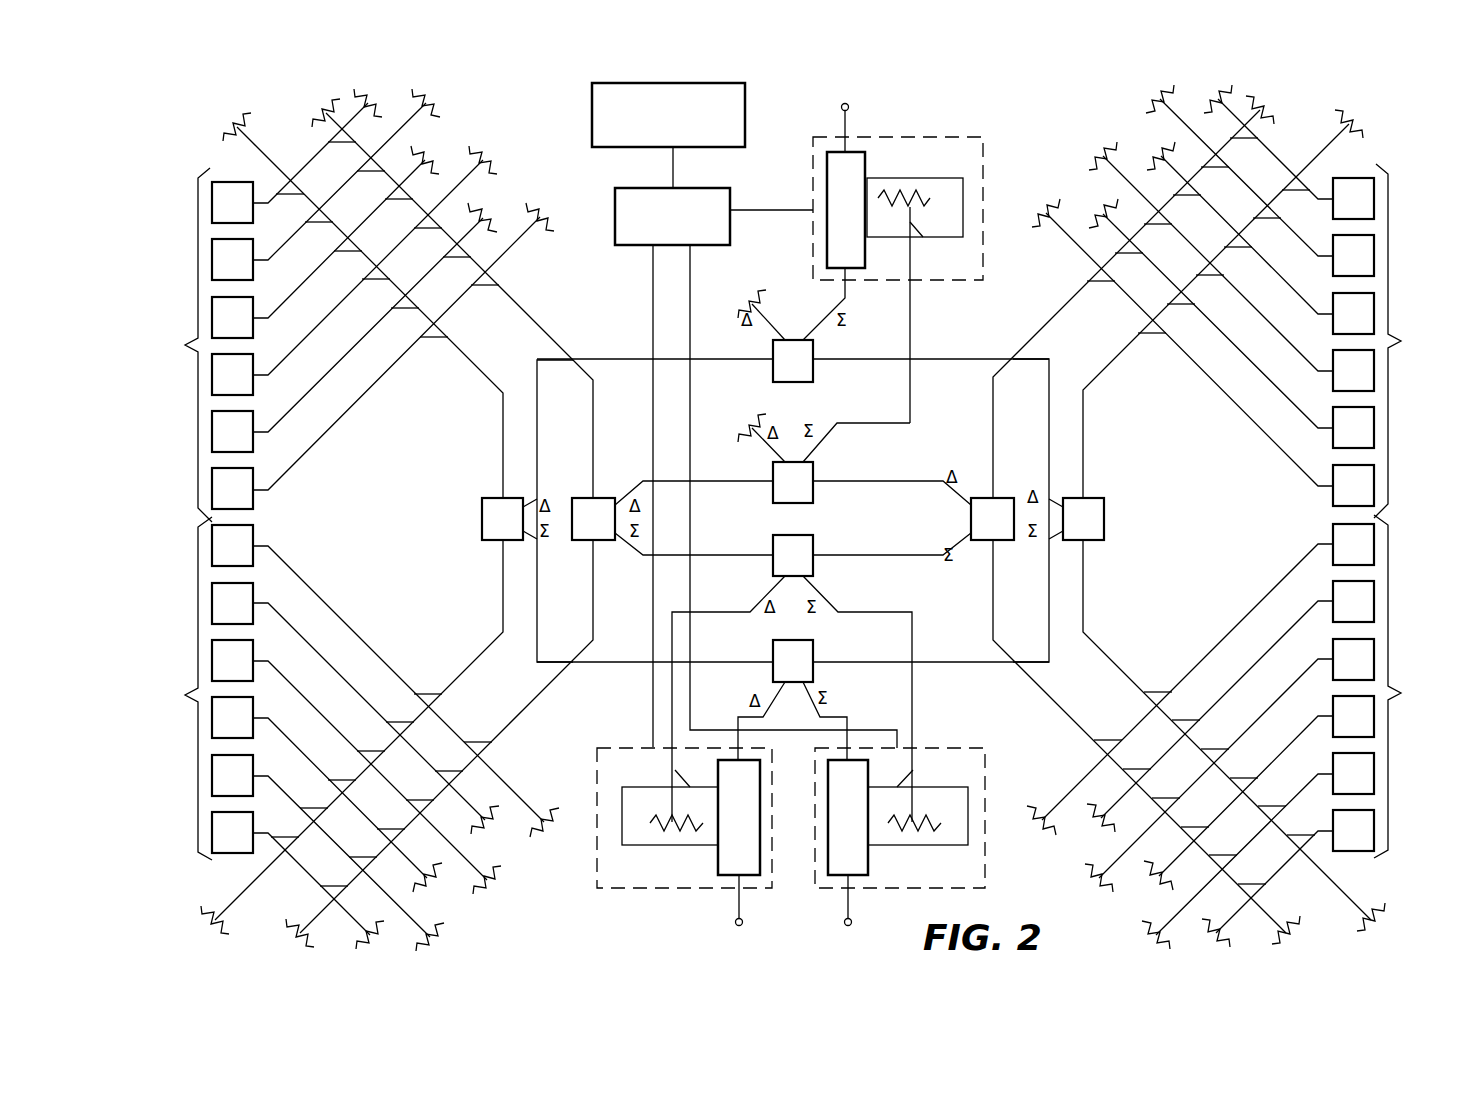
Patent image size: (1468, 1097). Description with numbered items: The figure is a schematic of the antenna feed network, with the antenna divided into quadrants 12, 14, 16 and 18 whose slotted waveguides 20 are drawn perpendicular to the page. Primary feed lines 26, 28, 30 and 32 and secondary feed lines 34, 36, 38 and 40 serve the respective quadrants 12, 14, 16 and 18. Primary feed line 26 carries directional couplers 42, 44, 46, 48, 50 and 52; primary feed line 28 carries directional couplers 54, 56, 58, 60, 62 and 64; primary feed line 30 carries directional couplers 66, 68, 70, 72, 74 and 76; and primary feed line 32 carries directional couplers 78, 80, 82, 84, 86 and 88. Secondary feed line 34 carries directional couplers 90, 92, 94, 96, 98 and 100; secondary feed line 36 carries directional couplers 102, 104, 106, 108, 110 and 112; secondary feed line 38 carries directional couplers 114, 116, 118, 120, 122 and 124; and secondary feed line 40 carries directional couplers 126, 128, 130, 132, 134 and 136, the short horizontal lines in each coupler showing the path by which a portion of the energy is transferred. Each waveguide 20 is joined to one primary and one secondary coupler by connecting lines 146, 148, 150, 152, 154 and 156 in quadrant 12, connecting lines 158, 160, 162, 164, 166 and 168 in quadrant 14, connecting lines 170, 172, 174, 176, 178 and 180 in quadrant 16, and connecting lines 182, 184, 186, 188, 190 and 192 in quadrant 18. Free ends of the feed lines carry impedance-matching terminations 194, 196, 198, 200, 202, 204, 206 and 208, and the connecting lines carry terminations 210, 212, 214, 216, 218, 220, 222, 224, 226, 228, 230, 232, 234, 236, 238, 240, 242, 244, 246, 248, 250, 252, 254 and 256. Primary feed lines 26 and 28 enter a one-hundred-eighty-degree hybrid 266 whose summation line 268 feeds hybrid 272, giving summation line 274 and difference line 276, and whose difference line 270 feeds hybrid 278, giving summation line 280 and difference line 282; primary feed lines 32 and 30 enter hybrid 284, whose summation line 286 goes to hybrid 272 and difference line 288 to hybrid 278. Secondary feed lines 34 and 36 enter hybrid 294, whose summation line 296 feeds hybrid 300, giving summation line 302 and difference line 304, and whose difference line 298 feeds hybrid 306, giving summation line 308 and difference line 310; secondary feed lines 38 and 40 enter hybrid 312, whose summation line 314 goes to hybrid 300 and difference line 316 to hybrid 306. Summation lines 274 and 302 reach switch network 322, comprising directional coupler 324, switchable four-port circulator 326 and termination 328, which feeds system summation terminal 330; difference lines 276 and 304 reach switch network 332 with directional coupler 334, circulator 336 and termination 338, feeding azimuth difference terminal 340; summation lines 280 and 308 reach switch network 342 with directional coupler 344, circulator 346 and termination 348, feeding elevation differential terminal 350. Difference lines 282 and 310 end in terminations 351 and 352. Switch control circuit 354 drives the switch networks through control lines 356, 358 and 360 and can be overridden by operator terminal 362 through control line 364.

The quadrant 12 is at (1411, 341).
The quadrant 14 is at (1410, 686).
The quadrant 16 is at (180, 688).
The quadrant 18 is at (180, 345).
The slotted waveguide 20 is at (232, 205).
The primary feed line 26 is at (1083, 418).
The primary feed line 28 is at (1083, 598).
The primary feed line 30 is at (503, 598).
The primary feed line 32 is at (503, 424).
The secondary feed line 34 is at (1063, 306).
The secondary feed line 36 is at (1035, 683).
The secondary feed line 38 is at (593, 598).
The secondary feed line 40 is at (540, 327).
The directional coupler 42 is at (1152, 337).
The directional coupler 44 is at (1181, 308).
The directional coupler 46 is at (1210, 279).
The directional coupler 48 is at (1238, 251).
The directional coupler 50 is at (1267, 222).
The directional coupler 52 is at (1296, 194).
The directional coupler 54 is at (1158, 688).
The directional coupler 56 is at (1186, 716).
The directional coupler 58 is at (1215, 745).
The directional coupler 60 is at (1244, 774).
The directional coupler 62 is at (1272, 802).
The directional coupler 64 is at (1301, 831).
The directional coupler 66 is at (428, 690).
The directional coupler 68 is at (400, 718).
The directional coupler 70 is at (371, 747).
The directional coupler 72 is at (342, 776).
The directional coupler 74 is at (314, 804).
The directional coupler 76 is at (285, 833).
The directional coupler 78 is at (434, 341).
The directional coupler 80 is at (405, 312).
The directional coupler 82 is at (376, 283).
The directional coupler 84 is at (348, 255).
The directional coupler 86 is at (319, 226).
The directional coupler 88 is at (290, 198).
The directional coupler 90 is at (1101, 285).
The directional coupler 92 is at (1129, 257).
The directional coupler 94 is at (1158, 228).
The directional coupler 96 is at (1187, 199).
The directional coupler 98 is at (1215, 171).
The directional coupler 100 is at (1244, 142).
The directional coupler 102 is at (1108, 736).
The directional coupler 104 is at (1137, 765).
The directional coupler 106 is at (1166, 794).
The directional coupler 108 is at (1195, 823).
The directional coupler 110 is at (1223, 851).
The directional coupler 112 is at (1252, 880).
The directional coupler 114 is at (478, 738).
The directional coupler 116 is at (455, 753).
The directional coupler 118 is at (420, 796).
The directional coupler 120 is at (398, 810).
The directional coupler 122 is at (363, 853).
The directional coupler 124 is at (334, 882).
The directional coupler 126 is at (485, 289).
The directional coupler 128 is at (457, 261).
The directional coupler 130 is at (428, 232).
The directional coupler 132 is at (399, 203).
The directional coupler 134 is at (371, 175).
The directional coupler 136 is at (342, 146).
The connecting line 146 is at (1283, 451).
The connecting line 148 is at (1310, 420).
The connecting line 150 is at (1310, 363).
The connecting line 152 is at (1310, 306).
The connecting line 154 is at (1310, 250).
The connecting line 156 is at (1320, 192).
The connecting line 158 is at (1290, 575).
The connecting line 160 is at (1310, 612).
The connecting line 162 is at (1310, 668).
The connecting line 164 is at (1310, 726).
The connecting line 166 is at (1310, 786).
The connecting line 168 is at (1320, 835).
The connecting line 170 is at (290, 567).
The connecting line 172 is at (276, 612).
The connecting line 174 is at (276, 668).
The connecting line 176 is at (276, 726).
The connecting line 178 is at (276, 783).
The connecting line 180 is at (268, 838).
The connecting line 182 is at (308, 450).
The connecting line 184 is at (276, 426).
The connecting line 186 is at (276, 369).
The connecting line 188 is at (276, 312).
The connecting line 190 is at (276, 254).
The connecting line 192 is at (266, 195).
The termination 194 is at (1358, 125).
The termination 196 is at (1385, 905).
The termination 198 is at (200, 922).
The termination 200 is at (228, 122).
The termination 202 is at (1275, 103).
The termination 204 is at (1295, 935).
The termination 206 is at (292, 930).
The termination 208 is at (312, 105).
The termination 210 is at (1048, 212).
The termination 212 is at (1095, 205).
The termination 214 is at (1100, 158).
The termination 216 is at (1155, 150).
The termination 218 is at (1148, 98).
The termination 220 is at (1256, 112).
The termination 222 is at (1040, 805).
The termination 224 is at (1095, 825).
The termination 226 is at (1100, 885).
The termination 228 is at (1150, 888).
The termination 230 is at (1160, 940).
The termination 232 is at (1232, 935).
The termination 234 is at (560, 803).
The termination 236 is at (500, 830).
The termination 238 is at (505, 882).
The termination 240 is at (448, 890).
The termination 242 is at (447, 938).
The termination 244 is at (356, 930).
The termination 246 is at (540, 213).
The termination 248 is at (490, 208).
The termination 250 is at (488, 160).
The termination 252 is at (432, 150).
The termination 254 is at (425, 100).
The termination 256 is at (327, 122).
The 180° hybrid 266 is at (1083, 505).
The summation line 268 is at (1049, 600).
The difference line 270 is at (1049, 432).
The 180° hybrid 272 is at (800, 658).
The summation line 274 is at (808, 697).
The difference line 276 is at (752, 713).
The 180° hybrid 278 is at (805, 372).
The summation line 280 is at (843, 306).
The difference line 282 is at (765, 300).
The 180° hybrid 284 is at (498, 516).
The summation line 286 is at (537, 595).
The difference line 288 is at (537, 447).
The 180° hybrid 294 is at (970, 520).
The summation line 296 is at (935, 559).
The difference line 298 is at (912, 480).
The 180° hybrid 300 is at (800, 548).
The summation line 302 is at (858, 610).
The difference line 304 is at (735, 613).
The 180° hybrid 306 is at (805, 490).
The summation line 308 is at (910, 392).
The difference line 310 is at (783, 428).
The 180° hybrid 312 is at (593, 507).
The summation line 314 is at (735, 556).
The difference line 316 is at (735, 482).
The switch network 322 is at (985, 750).
The directional coupler 324 is at (927, 772).
The switchable four port circulator 326 is at (850, 758).
The termination 328 is at (922, 832).
The system summation terminal 330 is at (850, 915).
The switch network 332 is at (637, 890).
The directional coupler 334 is at (655, 777).
The switchable four port circulator 336 is at (728, 865).
The termination 338 is at (680, 830).
The system azimuth difference terminal 340 is at (742, 912).
The switch network 342 is at (925, 137).
The directional coupler 344 is at (922, 247).
The four port circulator 346 is at (853, 258).
The termination 348 is at (908, 195).
The system elevation differential terminal 350 is at (848, 120).
The termination 351 is at (745, 298).
The termination 352 is at (750, 418).
The switch control circuit 354 is at (615, 232).
The control line 356 is at (690, 300).
The control line 358 is at (653, 275).
The control line 360 is at (795, 208).
The operator terminal 362 is at (745, 100).
The control line 364 is at (673, 158).